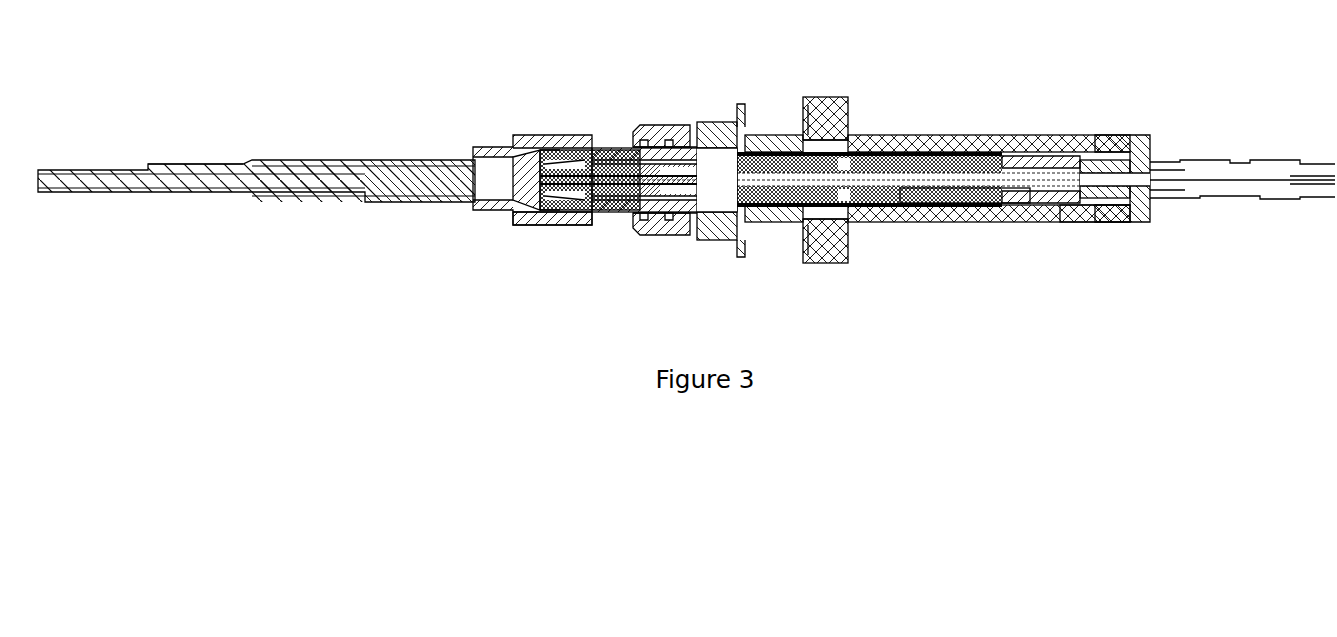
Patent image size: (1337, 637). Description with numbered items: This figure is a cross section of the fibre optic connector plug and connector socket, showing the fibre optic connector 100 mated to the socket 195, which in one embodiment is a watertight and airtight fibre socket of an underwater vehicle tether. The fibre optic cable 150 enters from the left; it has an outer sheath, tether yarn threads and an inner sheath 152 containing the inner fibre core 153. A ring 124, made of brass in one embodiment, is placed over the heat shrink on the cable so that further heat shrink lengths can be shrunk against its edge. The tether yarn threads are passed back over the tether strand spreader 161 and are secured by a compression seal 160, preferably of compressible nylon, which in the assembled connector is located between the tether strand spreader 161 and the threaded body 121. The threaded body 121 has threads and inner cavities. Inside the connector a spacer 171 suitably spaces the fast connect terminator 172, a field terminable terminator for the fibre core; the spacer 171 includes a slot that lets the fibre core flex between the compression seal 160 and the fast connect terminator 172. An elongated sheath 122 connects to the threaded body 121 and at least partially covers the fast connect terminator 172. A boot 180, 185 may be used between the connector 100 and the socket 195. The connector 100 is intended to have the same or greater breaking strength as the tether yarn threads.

The fibre optic connector 100 is at (708, 94).
The threaded body 121 is at (618, 214).
The elongated sheath 122 is at (1028, 222).
The ring 124 is at (513, 214).
The fibre optic cable 150 is at (365, 162).
The inner sheath 152 is at (590, 226).
The inner fibre core 153 is at (1093, 222).
The compression seal 160 is at (585, 136).
The tether strand spreader 161 is at (490, 145).
The spacer 171 is at (902, 134).
The fast connect terminator 172 is at (947, 222).
The boot 180 is at (653, 125).
The boot 185 is at (747, 123).
The socket 195 is at (1095, 138).